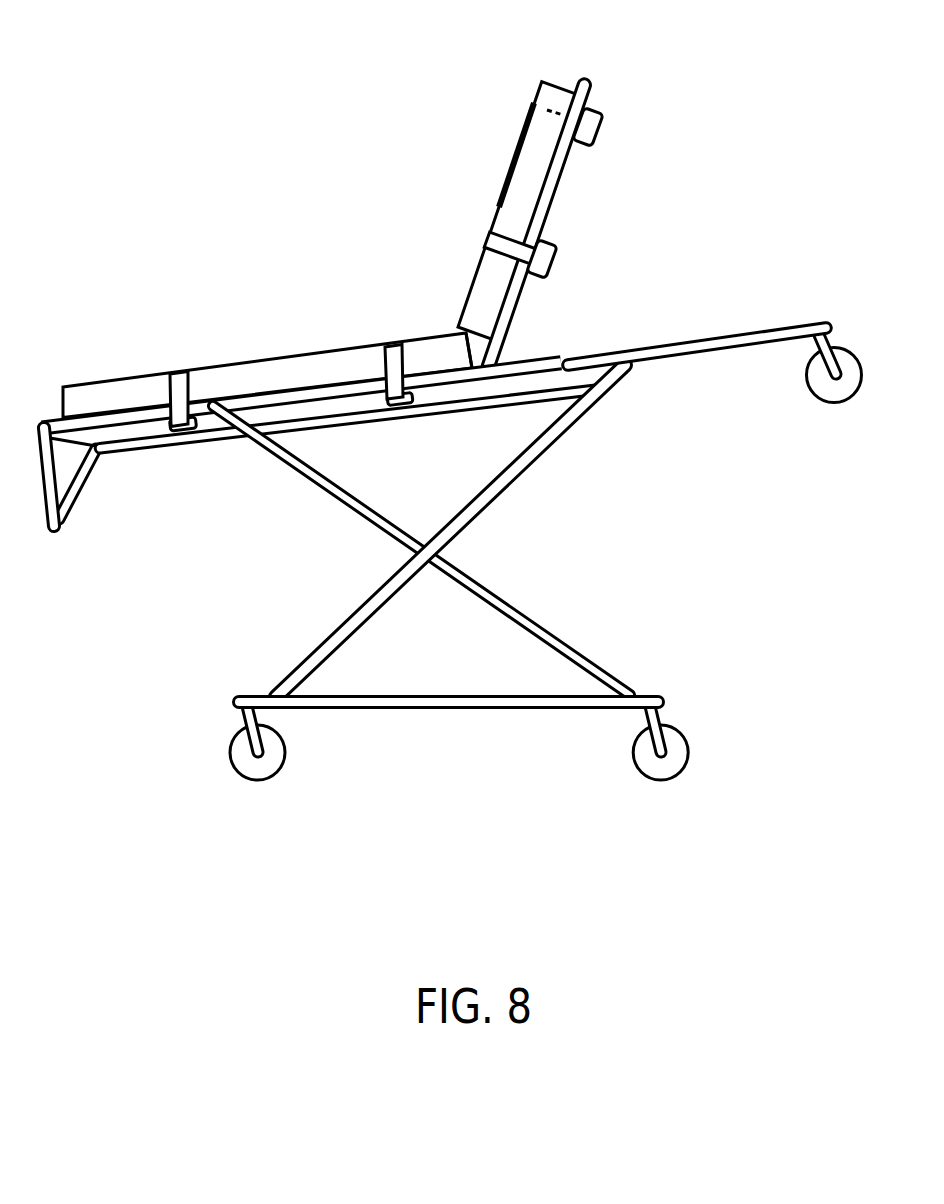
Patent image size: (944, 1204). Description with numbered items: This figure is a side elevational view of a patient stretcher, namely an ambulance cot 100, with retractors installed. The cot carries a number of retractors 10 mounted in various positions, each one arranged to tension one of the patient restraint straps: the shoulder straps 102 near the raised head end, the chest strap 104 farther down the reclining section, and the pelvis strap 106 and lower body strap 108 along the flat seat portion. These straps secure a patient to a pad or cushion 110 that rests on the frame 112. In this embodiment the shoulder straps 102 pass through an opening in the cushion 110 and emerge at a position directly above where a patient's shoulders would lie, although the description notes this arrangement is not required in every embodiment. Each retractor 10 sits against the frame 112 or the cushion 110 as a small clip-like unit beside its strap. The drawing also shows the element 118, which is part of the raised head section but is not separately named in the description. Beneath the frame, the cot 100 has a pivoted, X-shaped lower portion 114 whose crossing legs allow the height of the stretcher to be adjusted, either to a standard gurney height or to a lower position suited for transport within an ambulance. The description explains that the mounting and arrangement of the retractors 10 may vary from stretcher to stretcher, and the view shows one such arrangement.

The ambulance cot 100 is at (218, 246).
The shoulder straps 102 is at (541, 104).
The chest strap 104 is at (492, 240).
The pelvis strap 106 is at (392, 352).
The lower body strap 108 is at (177, 375).
The pad or cushion 110 is at (272, 368).
The frame 112 is at (704, 348).
The X-shaped lower portion 114 is at (518, 470).
The backrest tube 118 is at (555, 175).
The retractor 10 is at (592, 122).